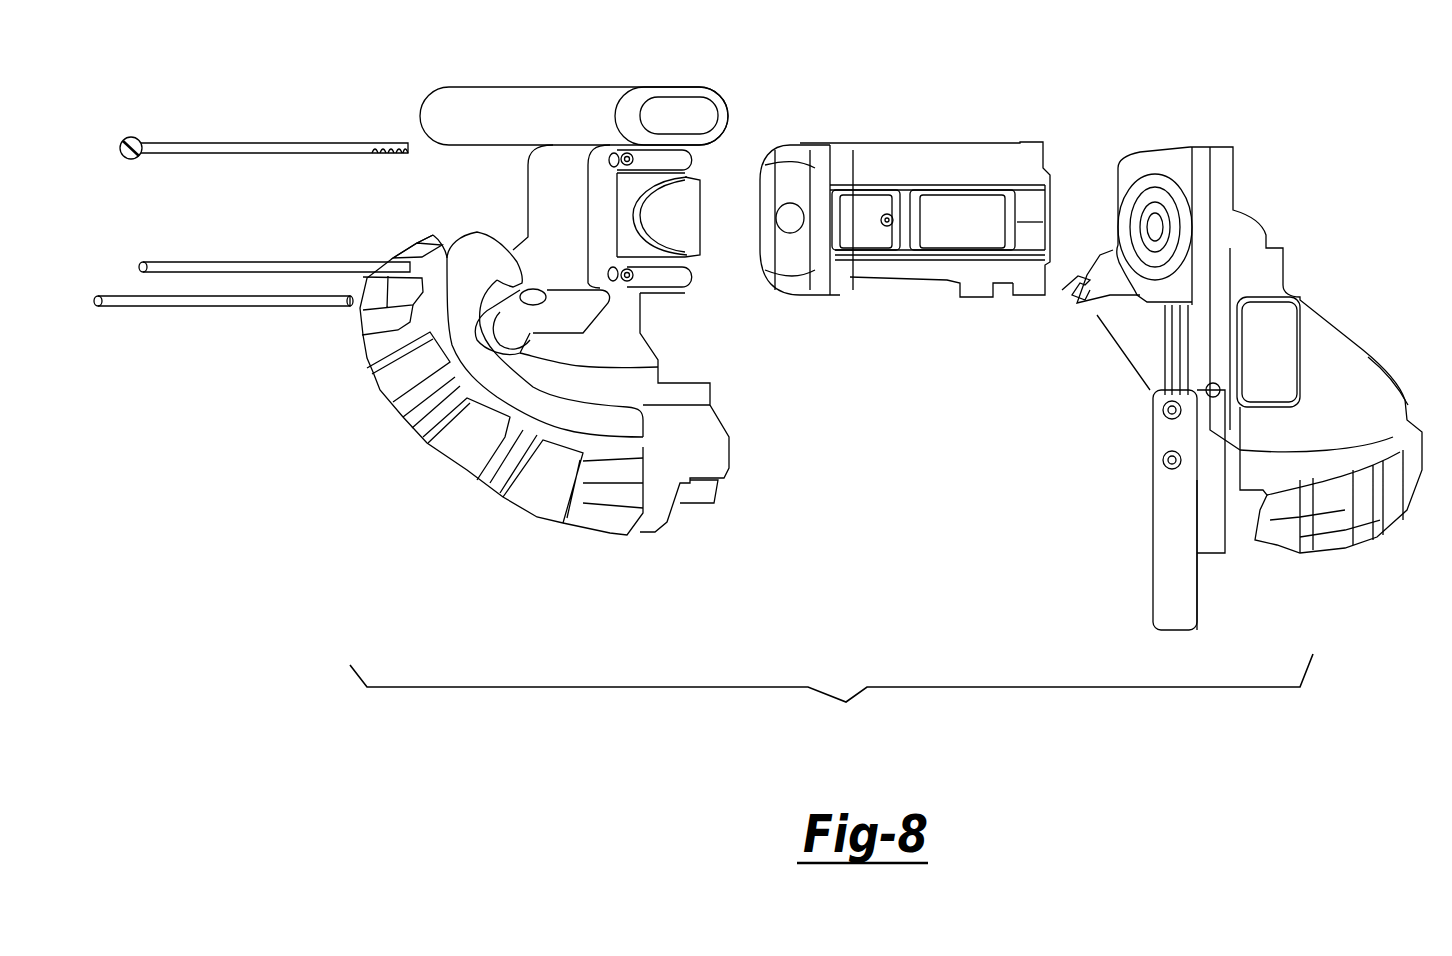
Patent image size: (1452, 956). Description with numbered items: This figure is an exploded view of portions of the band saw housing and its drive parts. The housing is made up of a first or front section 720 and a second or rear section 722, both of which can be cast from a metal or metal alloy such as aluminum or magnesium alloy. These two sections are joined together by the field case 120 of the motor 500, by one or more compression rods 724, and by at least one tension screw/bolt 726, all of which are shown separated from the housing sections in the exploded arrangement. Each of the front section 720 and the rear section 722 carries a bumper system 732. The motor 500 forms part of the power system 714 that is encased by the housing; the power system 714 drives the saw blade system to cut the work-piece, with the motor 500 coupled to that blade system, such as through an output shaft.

The motor 500 is at (992, 88).
The field case 120 is at (930, 142).
The power system 714 is at (893, 343).
The front section 720 is at (677, 550).
The rear section 722 is at (1322, 565).
The compression rods 724 is at (210, 266).
The tension screw/bolt 726 is at (270, 146).
The bumper system 732 is at (393, 440).